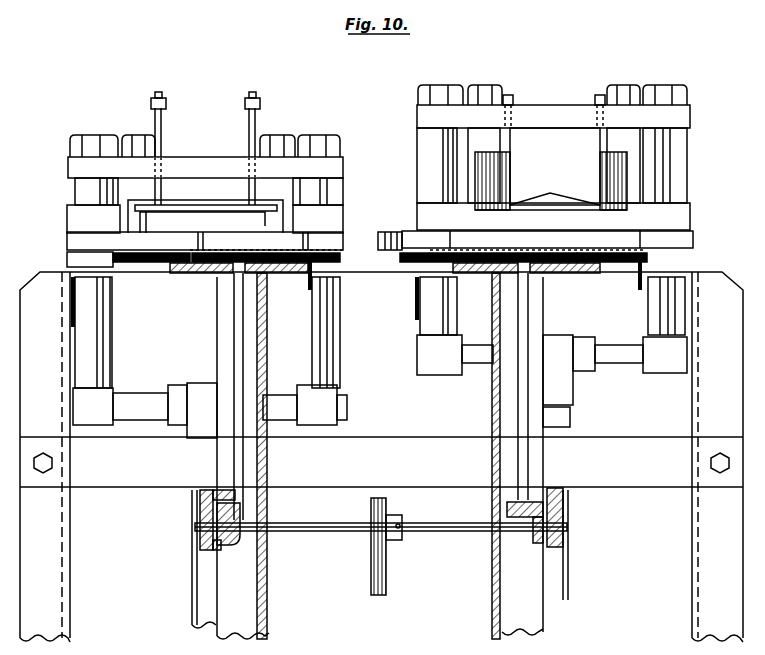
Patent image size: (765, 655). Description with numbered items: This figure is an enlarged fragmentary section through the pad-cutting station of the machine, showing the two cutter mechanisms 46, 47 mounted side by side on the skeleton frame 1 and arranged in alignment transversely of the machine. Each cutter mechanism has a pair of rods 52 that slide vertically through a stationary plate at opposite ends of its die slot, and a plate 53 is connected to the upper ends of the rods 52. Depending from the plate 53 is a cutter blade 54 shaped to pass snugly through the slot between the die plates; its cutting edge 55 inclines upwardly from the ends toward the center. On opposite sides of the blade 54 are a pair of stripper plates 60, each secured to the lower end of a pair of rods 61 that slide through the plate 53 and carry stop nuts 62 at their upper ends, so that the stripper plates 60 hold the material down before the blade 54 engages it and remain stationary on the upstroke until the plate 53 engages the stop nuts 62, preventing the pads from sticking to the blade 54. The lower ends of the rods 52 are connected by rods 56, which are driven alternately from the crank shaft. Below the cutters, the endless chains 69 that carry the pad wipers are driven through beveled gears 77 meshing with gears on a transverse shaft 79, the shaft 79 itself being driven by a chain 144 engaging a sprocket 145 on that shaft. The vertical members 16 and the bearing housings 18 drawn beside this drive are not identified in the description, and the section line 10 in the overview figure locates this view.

The skeleton frame 1 is at (705, 521).
The section line 10 is at (217, 274).
The vertical rod 16 is at (234, 447).
The bearing housing 18 is at (222, 548).
The cutter mechanism 46 is at (547, 88).
The cutter mechanism 47 is at (205, 143).
The rods 52 is at (320, 350).
The plate 53 is at (205, 162).
The cutter blade 54 is at (283, 215).
The cutting edge 55 is at (575, 205).
The rods 56 is at (283, 438).
The stripper plates 60 is at (210, 208).
The rods 61 is at (155, 118).
The stop nuts 62 is at (157, 95).
The endless chain 69 is at (330, 253).
The beveled gears 77 is at (240, 515).
The shaft 79 is at (445, 532).
The chain 144 is at (375, 582).
The sprocket 145 is at (387, 500).